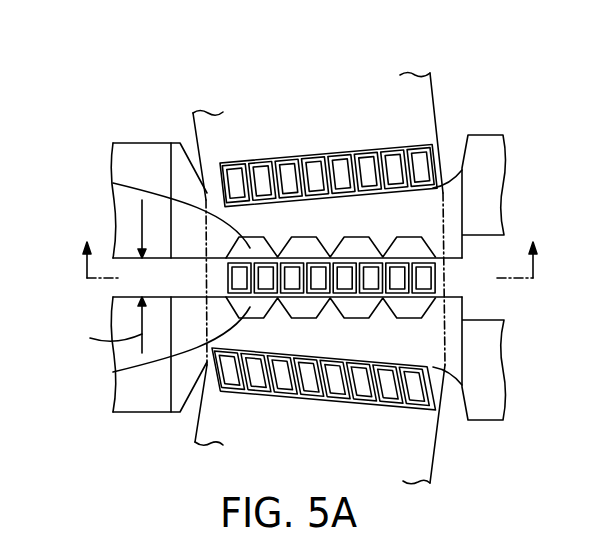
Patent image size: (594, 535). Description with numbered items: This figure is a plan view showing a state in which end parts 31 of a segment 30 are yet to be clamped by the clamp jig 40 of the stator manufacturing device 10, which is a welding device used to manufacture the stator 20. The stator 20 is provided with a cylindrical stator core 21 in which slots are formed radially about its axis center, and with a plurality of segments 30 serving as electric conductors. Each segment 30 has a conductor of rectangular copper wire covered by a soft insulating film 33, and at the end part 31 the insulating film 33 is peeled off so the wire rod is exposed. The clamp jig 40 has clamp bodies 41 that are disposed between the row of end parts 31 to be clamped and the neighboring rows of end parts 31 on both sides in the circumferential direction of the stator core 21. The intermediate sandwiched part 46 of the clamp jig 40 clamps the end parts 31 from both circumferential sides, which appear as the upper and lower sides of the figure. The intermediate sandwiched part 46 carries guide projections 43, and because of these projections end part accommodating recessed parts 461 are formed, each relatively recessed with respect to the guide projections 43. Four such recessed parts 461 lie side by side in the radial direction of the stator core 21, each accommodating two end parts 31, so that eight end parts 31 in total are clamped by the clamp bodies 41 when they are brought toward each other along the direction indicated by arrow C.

The stator manufacturing device 10 is at (112, 117).
The stator 20 is at (443, 89).
The stator core 21 is at (425, 117).
The segment 30 is at (444, 160).
The end part 31 is at (233, 163).
The insulating film 33 is at (289, 158).
The clamp jig 40 is at (145, 134).
The clamp body 41 is at (168, 142).
The guide projection 43 is at (280, 243).
The intermediate sandwiched part 46 is at (360, 183).
The end part accommodating recessed part 461 is at (113, 183).